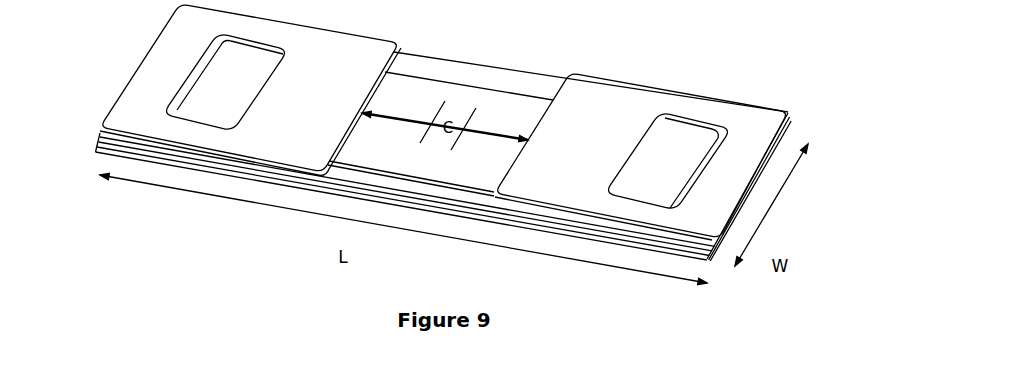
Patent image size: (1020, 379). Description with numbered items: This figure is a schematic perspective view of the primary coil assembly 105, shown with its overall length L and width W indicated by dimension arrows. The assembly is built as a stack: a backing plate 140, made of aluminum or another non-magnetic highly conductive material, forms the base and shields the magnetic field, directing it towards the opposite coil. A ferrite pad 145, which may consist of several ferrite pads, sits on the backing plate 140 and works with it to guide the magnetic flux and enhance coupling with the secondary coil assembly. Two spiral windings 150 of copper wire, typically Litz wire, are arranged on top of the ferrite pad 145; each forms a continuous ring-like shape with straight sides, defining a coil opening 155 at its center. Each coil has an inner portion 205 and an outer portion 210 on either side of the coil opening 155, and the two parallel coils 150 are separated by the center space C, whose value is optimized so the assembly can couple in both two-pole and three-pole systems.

The primary coil assembly 105 is at (827, 95).
The backing plate 140 is at (480, 78).
The ferrite pad 145 is at (522, 120).
The spiral windings 150 is at (324, 118).
The coil opening 155 is at (660, 172).
The inner portion 205 is at (325, 50).
The outer portion 210 is at (162, 77).